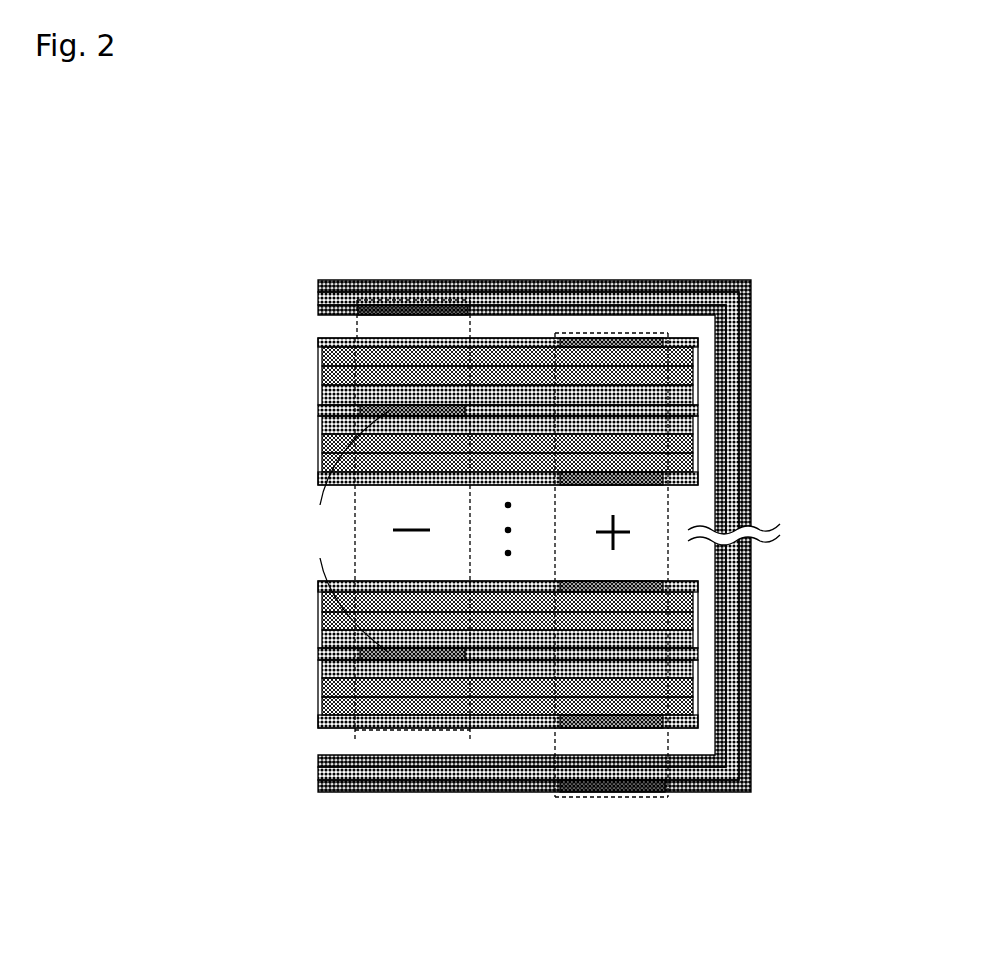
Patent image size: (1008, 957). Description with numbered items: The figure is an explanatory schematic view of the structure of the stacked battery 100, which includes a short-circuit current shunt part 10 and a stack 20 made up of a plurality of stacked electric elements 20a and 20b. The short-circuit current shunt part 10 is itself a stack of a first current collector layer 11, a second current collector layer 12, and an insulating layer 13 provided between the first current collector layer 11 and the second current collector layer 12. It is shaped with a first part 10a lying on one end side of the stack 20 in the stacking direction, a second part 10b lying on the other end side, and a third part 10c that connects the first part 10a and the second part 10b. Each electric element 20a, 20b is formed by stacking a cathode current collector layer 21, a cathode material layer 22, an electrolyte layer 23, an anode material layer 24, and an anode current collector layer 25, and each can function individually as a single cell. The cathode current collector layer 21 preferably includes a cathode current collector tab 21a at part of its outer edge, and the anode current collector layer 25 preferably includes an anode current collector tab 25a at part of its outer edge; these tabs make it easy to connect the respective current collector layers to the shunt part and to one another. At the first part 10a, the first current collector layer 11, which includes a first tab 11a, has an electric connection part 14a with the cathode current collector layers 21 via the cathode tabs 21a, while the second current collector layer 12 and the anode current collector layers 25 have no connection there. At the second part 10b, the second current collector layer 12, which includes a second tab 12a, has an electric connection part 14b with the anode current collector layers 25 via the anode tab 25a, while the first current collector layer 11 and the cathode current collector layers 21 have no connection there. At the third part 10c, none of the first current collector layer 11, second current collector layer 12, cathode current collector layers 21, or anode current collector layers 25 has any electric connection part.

The stacked battery 100 is at (537, 167).
The short-circuit current shunt part 10 is at (462, 535).
The first part 10a is at (533, 807).
The second part 10b is at (533, 263).
The third part 10c is at (777, 514).
The first current collector layer 11 is at (318, 286).
The first tab 11a is at (614, 797).
The second current collector layer 12 is at (318, 310).
The second tab 12a is at (412, 305).
The insulating layer 13 is at (318, 298).
The electric connection part 14a is at (555, 735).
The electric connection part 14b is at (357, 318).
The stack 20 is at (423, 532).
The electric element 20a is at (214, 390).
The electric element 20b is at (214, 450).
The cathode current collector layer 21 is at (318, 342).
The cathode current collector tab 21a is at (645, 342).
The cathode material layer 22 is at (322, 356).
The electrolyte layer 23 is at (322, 375).
The anode material layer 24 is at (322, 395).
The anode current collector layer 25 is at (318, 410).
The anode current collector tab 25a is at (345, 531).